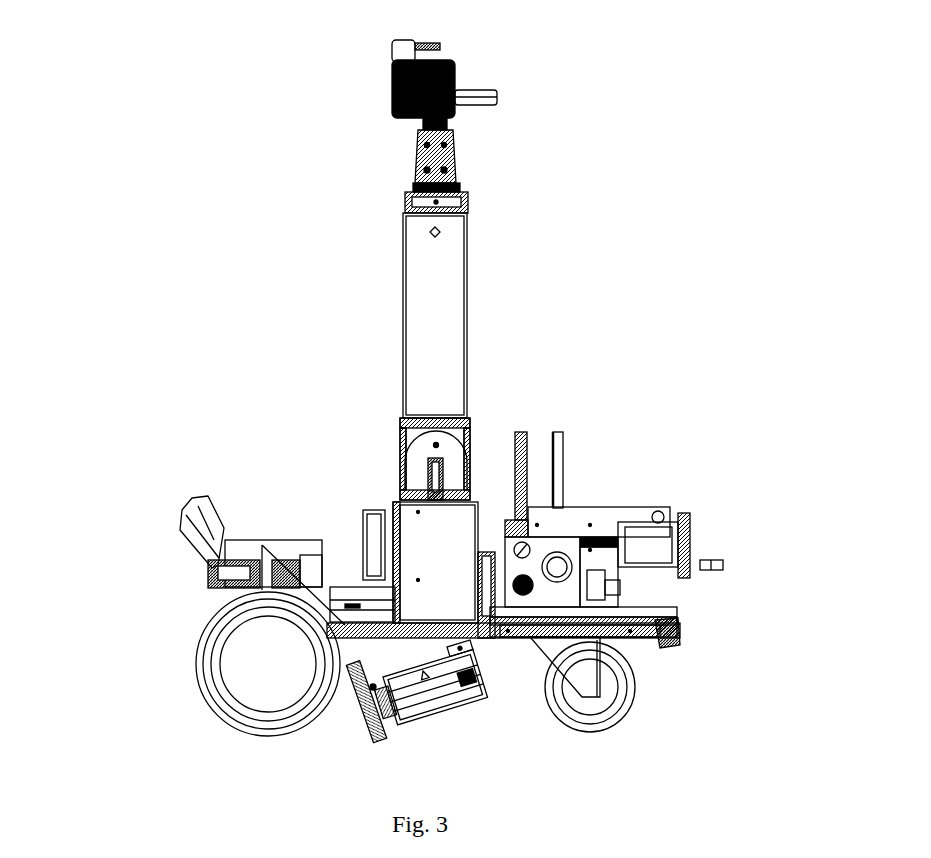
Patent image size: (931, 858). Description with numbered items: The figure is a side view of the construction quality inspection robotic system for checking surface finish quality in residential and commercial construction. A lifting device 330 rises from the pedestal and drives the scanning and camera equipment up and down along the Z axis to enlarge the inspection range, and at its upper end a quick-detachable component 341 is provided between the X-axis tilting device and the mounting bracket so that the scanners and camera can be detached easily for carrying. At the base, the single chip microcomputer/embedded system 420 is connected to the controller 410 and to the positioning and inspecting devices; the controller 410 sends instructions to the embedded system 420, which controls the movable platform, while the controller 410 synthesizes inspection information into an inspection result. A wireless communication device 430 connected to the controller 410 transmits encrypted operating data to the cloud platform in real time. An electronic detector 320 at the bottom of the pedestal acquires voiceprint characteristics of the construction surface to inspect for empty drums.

The quick-detachable component 341 is at (430, 131).
The lifting device 330 is at (455, 285).
The single chip microcomputer/embedded system 420 is at (378, 527).
The wireless communication device 430 is at (567, 432).
The controller 410 is at (186, 512).
The electronic detector 320 is at (372, 741).